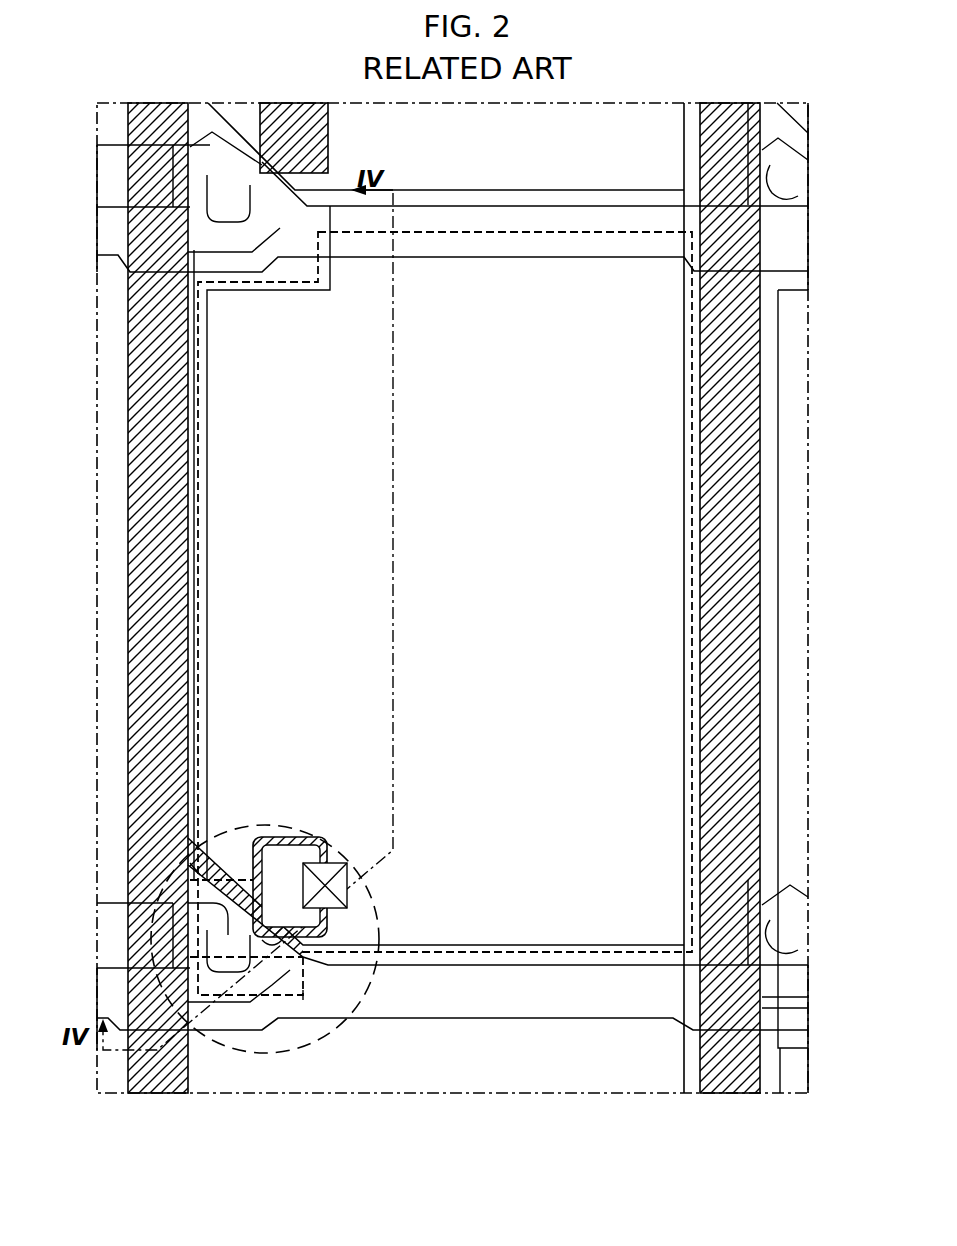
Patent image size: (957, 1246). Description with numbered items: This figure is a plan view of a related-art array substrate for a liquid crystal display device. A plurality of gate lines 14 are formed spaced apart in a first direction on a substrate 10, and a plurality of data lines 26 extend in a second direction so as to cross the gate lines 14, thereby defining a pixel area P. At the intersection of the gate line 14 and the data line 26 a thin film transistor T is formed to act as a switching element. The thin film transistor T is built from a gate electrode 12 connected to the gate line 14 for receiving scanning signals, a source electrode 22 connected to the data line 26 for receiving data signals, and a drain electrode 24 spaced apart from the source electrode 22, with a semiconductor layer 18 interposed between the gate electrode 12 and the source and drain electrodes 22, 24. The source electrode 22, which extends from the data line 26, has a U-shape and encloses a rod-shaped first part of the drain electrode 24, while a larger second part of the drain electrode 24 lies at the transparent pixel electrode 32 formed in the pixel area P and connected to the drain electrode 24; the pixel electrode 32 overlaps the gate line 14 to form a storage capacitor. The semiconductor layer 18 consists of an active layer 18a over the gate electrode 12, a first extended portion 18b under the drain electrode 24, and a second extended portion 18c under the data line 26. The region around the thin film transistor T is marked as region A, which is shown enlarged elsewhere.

The substrate 10 is at (808, 823).
The gate electrode 12 is at (242, 880).
The gate line 14 is at (515, 258).
The semiconductor layer 18 is at (254, 858).
The active layer 18a is at (245, 878).
The first extended portion 18b is at (278, 853).
The second extended portion 18c is at (222, 865).
The source electrode 22 is at (274, 945).
The drain electrode 24 is at (320, 837).
The data line 26 is at (128, 600).
The pixel electrode 32 is at (684, 735).
The pixel area P is at (692, 610).
The thin film transistor T is at (378, 912).
The region A is at (303, 995).